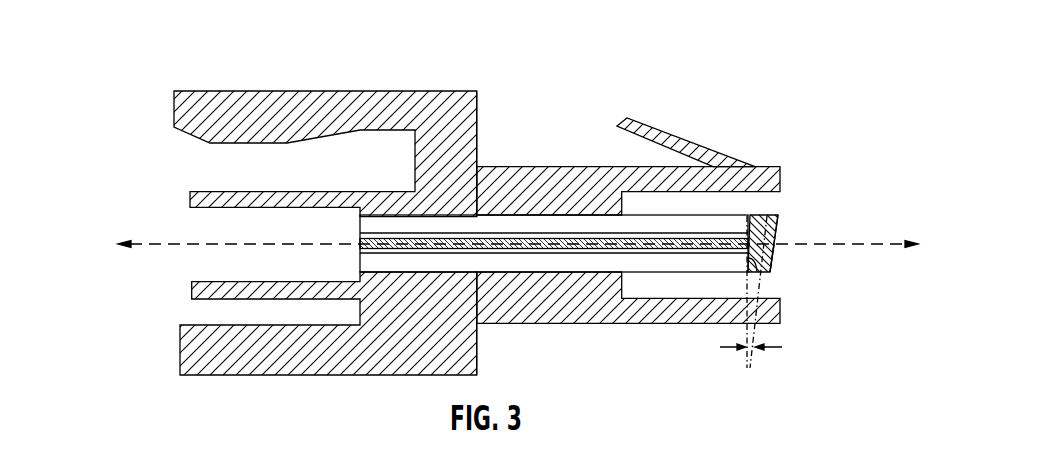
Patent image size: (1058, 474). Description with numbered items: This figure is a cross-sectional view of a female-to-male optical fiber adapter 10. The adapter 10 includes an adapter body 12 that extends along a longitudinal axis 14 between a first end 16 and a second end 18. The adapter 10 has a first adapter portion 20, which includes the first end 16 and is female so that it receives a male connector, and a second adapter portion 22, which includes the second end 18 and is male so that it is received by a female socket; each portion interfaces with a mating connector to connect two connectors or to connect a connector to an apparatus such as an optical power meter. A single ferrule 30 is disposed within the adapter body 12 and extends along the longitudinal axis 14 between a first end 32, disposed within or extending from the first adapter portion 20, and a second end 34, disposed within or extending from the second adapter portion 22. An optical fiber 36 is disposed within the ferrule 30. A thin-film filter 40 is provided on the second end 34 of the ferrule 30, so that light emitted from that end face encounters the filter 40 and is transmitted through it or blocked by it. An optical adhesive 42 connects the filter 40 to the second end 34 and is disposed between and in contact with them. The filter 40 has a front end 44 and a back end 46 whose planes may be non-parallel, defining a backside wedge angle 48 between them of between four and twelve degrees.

The adapter 10 is at (305, 190).
The adapter body 12 is at (305, 211).
The longitudinal axis 14 is at (168, 247).
The first end 16 is at (171, 107).
The second end 18 is at (780, 177).
The first adapter portion 20 is at (456, 124).
The second adapter portion 22 is at (650, 188).
The ferrule 30 is at (659, 216).
The first end 32 is at (522, 224).
The second end 34 is at (817, 235).
The optical fiber 36 is at (573, 243).
The thin-film filter 40 is at (794, 227).
The optical adhesive 42 is at (740, 284).
The front end 44 is at (755, 265).
The back end 46 is at (772, 253).
The backside wedge angle 48 is at (781, 345).